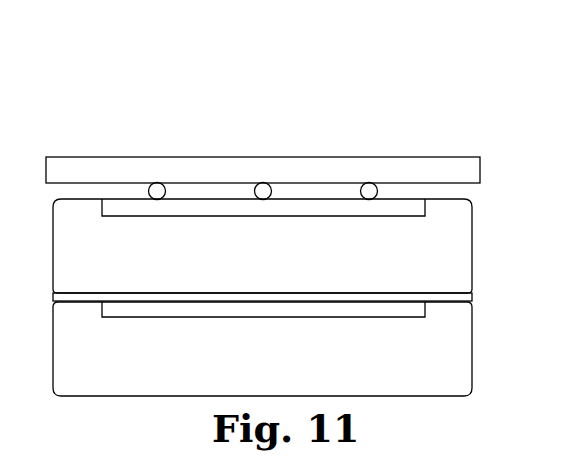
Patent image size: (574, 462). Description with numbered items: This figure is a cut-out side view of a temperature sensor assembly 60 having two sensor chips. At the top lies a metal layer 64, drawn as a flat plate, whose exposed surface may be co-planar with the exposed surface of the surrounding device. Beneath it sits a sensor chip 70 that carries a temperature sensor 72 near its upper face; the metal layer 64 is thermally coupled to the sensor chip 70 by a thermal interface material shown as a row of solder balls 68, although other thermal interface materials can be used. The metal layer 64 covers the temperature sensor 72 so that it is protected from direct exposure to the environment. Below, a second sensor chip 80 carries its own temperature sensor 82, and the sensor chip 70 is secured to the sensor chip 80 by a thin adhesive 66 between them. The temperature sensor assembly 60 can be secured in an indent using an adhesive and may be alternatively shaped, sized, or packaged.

The temperature sensor assembly 60 is at (268, 132).
The metal layer 64 is at (430, 166).
The adhesive 66 is at (474, 296).
The solder balls 68 is at (369, 182).
The sensor chip 70 is at (463, 257).
The temperature sensor 72 is at (411, 208).
The sensor chip 80 is at (462, 362).
The temperature sensor 82 is at (411, 311).